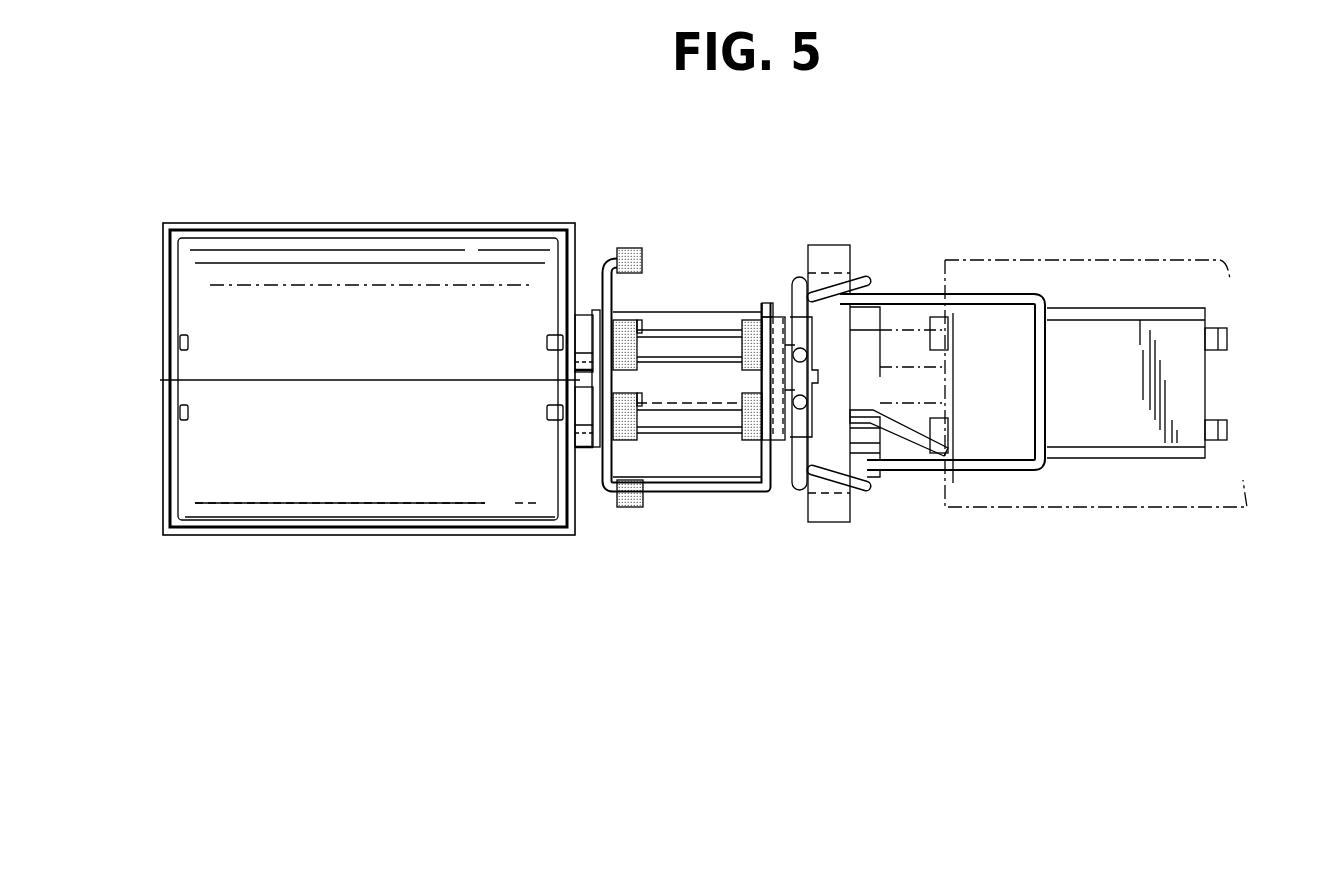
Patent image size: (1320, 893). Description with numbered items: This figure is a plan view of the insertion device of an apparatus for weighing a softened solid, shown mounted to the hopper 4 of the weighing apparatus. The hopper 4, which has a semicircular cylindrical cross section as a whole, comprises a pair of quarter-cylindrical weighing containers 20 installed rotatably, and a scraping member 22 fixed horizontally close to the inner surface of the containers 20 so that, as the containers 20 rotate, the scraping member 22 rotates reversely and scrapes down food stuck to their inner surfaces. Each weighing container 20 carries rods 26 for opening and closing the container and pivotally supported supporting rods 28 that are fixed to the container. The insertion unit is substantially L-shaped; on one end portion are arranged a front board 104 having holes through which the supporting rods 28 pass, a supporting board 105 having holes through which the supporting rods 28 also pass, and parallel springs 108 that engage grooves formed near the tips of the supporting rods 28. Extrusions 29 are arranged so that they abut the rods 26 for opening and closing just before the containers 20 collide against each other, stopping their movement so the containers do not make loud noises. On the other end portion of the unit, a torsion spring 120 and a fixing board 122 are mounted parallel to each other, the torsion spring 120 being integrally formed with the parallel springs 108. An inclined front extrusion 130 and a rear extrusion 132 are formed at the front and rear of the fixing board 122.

The hopper 4 is at (303, 210).
The scraping member 22 is at (354, 237).
The weighing containers 20 is at (472, 242).
The extrusions 29 is at (628, 248).
The supporting rods 28 is at (676, 333).
The rods for opening and closing 26 is at (710, 295).
The front board 104 is at (603, 490).
The supporting board 105 is at (768, 293).
The parallel springs 108 is at (830, 345).
The front extrusion 130 is at (930, 295).
The torsion spring 120 is at (1047, 390).
The fixing board 122 is at (1105, 332).
The rear extrusion 132 is at (1226, 337).